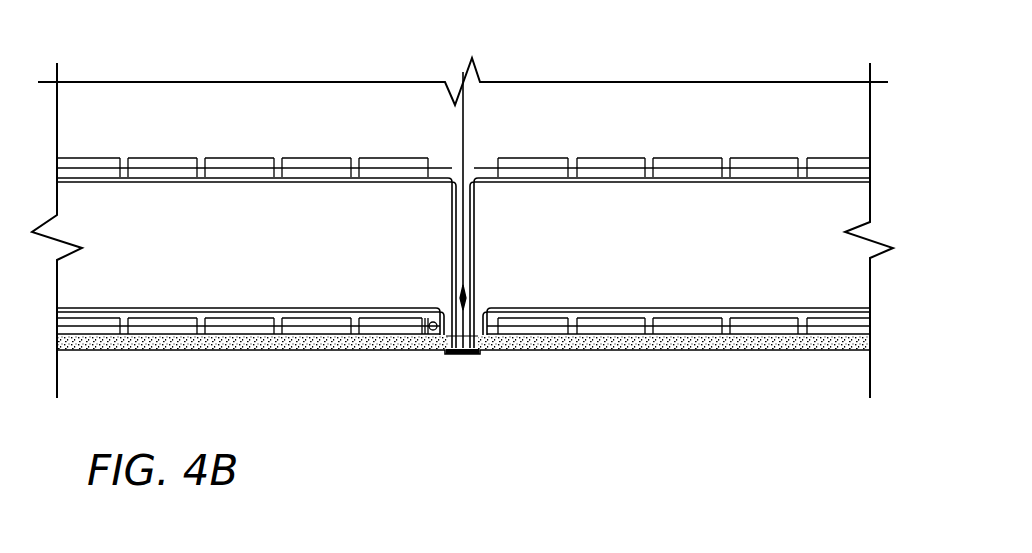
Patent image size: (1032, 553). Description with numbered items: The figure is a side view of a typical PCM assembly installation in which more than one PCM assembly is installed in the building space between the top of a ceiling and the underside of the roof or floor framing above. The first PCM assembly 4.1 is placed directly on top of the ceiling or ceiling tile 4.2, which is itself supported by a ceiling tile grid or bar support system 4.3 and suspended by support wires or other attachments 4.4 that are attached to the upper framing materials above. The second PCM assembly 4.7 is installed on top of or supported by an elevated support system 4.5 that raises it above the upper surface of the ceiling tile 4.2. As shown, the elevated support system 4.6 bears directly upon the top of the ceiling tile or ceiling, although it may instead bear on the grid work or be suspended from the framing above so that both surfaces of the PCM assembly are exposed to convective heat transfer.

The first PCM assembly 4.1 is at (542, 338).
The ceiling tile 4.2 is at (333, 356).
The ceiling tile grid or bar support system 4.3 is at (538, 312).
The support wires 4.4 is at (472, 133).
The elevated support system 4.5 is at (670, 172).
The elevated support system bearing point 4.6 is at (461, 362).
The second PCM assembly 4.7 is at (315, 152).